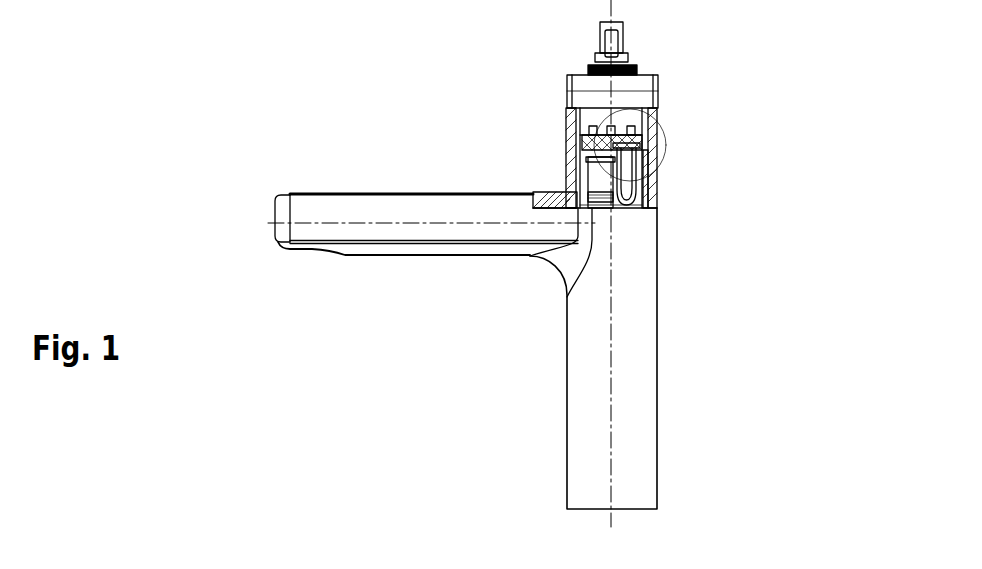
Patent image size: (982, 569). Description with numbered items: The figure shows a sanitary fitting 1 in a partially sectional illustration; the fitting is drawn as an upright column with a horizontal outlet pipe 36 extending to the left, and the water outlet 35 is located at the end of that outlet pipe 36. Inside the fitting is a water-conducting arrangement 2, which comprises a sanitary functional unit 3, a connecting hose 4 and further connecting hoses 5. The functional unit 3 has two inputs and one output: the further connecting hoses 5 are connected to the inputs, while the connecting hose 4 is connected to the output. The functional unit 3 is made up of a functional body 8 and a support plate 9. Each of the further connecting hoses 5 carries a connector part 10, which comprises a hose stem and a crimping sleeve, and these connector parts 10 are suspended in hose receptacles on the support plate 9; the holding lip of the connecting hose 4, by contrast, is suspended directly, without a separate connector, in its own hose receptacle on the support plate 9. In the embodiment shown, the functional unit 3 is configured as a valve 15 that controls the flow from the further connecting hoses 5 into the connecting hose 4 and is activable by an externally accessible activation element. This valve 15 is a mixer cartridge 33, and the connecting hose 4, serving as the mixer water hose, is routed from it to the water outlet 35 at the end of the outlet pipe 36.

The sanitary fitting 1 is at (718, 328).
The water-conducting arrangement 2 is at (660, 198).
The sanitary functional unit 3 is at (671, 22).
The valve 15 is at (687, 65).
The mixer cartridge 33 is at (700, 91).
The connecting hose 4 is at (650, 190).
The further connecting hoses 5 is at (597, 208).
The functional body 8 is at (583, 128).
The support plate 9 is at (583, 152).
The connector part 10 is at (595, 180).
The water outlet 35 is at (321, 268).
The outlet pipe 36 is at (432, 241).